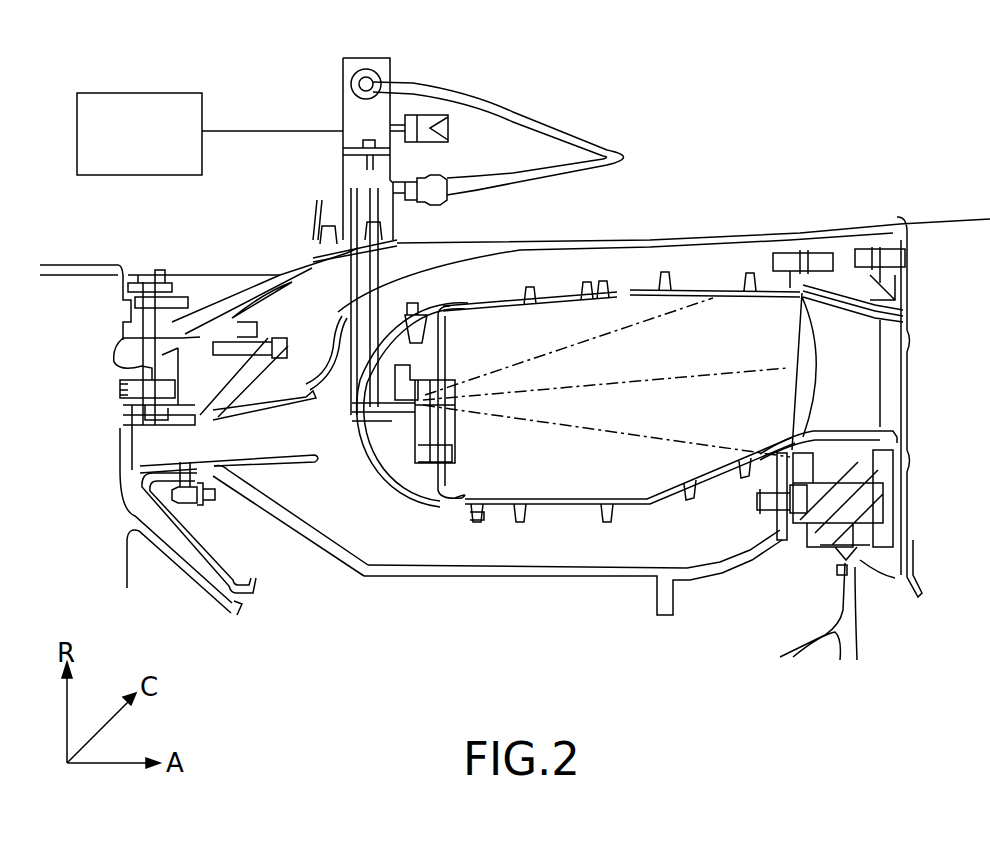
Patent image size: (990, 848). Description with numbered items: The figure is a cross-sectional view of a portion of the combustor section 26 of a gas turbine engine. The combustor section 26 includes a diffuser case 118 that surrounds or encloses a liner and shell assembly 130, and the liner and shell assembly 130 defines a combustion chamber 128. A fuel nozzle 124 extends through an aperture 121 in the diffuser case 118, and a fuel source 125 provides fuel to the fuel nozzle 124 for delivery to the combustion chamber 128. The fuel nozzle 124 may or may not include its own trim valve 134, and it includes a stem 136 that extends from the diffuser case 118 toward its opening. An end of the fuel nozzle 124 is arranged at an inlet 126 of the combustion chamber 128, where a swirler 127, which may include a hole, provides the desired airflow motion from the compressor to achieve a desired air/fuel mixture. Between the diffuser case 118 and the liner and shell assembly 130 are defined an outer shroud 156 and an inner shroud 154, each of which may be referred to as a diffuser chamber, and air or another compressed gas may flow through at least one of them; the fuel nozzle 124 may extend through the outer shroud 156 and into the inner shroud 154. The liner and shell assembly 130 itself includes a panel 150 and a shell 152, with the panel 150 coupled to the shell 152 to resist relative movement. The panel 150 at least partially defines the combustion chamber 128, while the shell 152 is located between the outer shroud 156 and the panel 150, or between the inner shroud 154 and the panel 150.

The combustor section 26 is at (703, 107).
The diffuser case 118 is at (648, 240).
The aperture 121 is at (382, 277).
The fuel nozzle 124 is at (383, 433).
The fuel source 125 is at (157, 147).
The inlet 126 is at (423, 400).
The swirler 127 is at (432, 500).
The combustion chamber 128 is at (670, 362).
The liner and shell assembly 130 is at (562, 282).
The trim valve 134 is at (358, 113).
The stem 136 is at (339, 386).
The panel 150 is at (560, 493).
The shell 152 is at (565, 505).
The inner shroud 154 is at (578, 578).
The outer shroud 156 is at (573, 295).